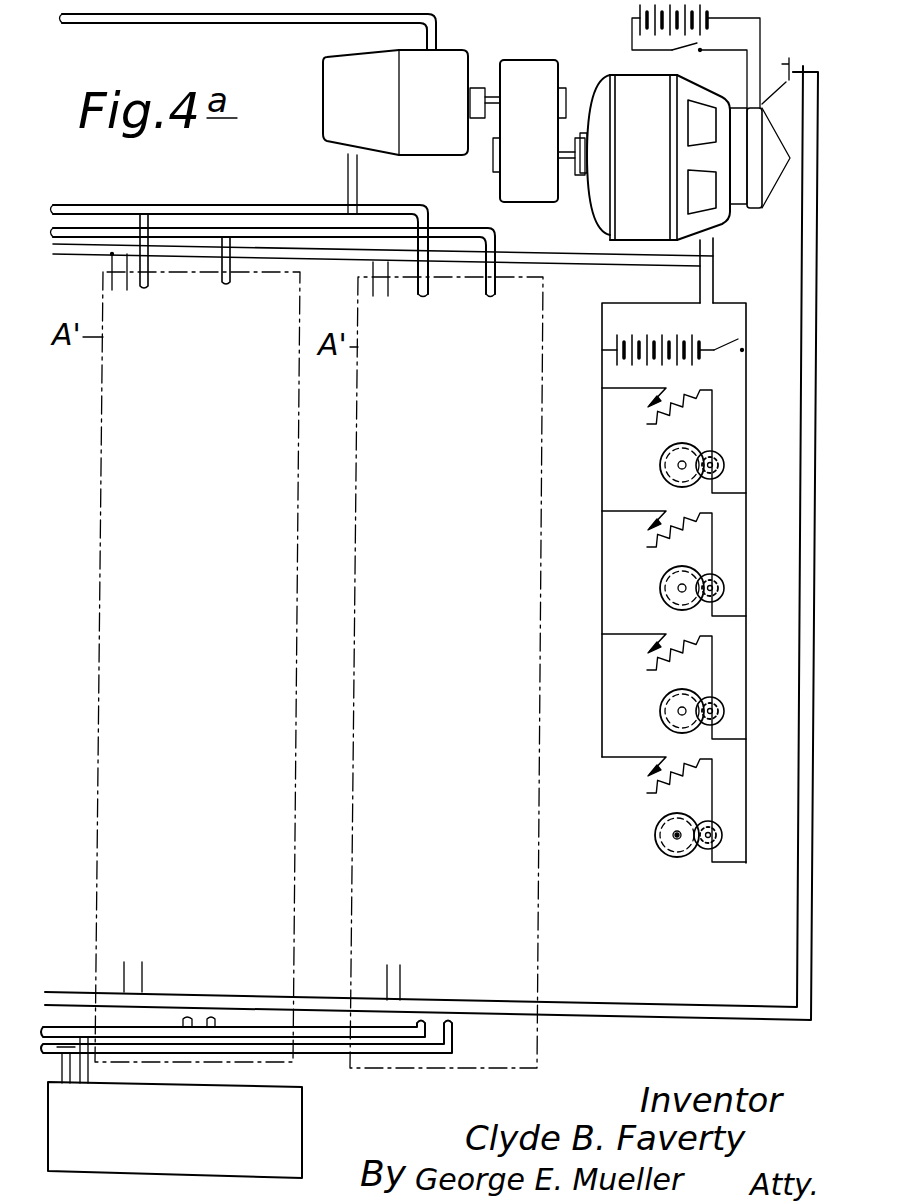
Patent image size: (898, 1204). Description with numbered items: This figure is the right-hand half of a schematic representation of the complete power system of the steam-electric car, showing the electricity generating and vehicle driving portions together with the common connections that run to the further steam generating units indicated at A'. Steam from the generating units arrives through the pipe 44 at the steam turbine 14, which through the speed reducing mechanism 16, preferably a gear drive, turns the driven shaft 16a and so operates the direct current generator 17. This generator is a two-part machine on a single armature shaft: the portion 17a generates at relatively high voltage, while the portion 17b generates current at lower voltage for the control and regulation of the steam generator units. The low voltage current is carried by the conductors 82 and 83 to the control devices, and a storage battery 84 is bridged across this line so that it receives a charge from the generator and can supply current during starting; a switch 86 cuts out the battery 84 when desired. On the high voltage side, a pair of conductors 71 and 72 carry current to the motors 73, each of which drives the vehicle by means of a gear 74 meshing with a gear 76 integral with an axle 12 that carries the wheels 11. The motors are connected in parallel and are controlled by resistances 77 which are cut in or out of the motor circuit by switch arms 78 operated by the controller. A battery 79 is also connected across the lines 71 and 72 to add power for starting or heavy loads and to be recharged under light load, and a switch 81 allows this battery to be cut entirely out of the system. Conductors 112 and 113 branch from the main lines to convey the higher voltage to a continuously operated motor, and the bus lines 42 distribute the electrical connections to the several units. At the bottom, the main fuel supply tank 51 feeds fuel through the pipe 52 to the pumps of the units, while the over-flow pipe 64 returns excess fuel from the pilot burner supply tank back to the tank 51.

The supply pipe 44 is at (136, 20).
The steam turbine 14 is at (421, 145).
The speed reducing mechanism 16 is at (513, 72).
The driven shaft 16a is at (566, 176).
The direct current generator 17 is at (628, 157).
The high voltage portion of generator 17a is at (720, 214).
The low voltage portion of generator 17b is at (753, 206).
The storage battery 84 is at (640, 9).
The switch 86 is at (676, 52).
The conductor 82 is at (755, 86).
The conductor 83 is at (760, 94).
The bus bars 42 is at (275, 233).
The conductor 112 is at (629, 262).
The conductor 113 is at (576, 264).
The conductor 71 is at (699, 283).
The conductor 72 is at (714, 283).
The battery 79 is at (662, 330).
The switch 81 is at (735, 345).
The switch arm 78 is at (645, 404).
The resistance 77 is at (648, 428).
The gear 76 is at (667, 466).
The wheel 11 is at (671, 485).
The axle 12 is at (676, 840).
The motor 73 is at (716, 453).
The gear 74 is at (714, 468).
The pipe 52 is at (305, 1020).
The over-flow pipe 64 is at (335, 1056).
The main fuel supply tank 51 is at (295, 1112).